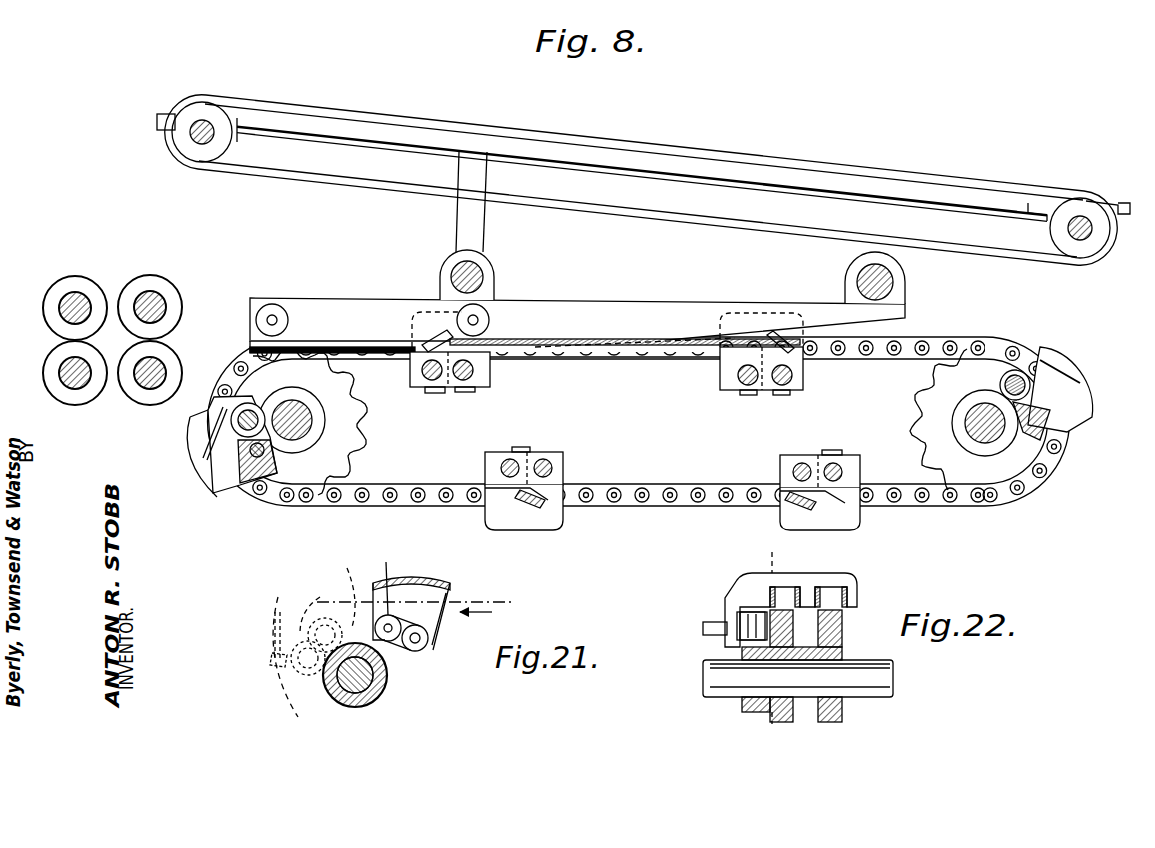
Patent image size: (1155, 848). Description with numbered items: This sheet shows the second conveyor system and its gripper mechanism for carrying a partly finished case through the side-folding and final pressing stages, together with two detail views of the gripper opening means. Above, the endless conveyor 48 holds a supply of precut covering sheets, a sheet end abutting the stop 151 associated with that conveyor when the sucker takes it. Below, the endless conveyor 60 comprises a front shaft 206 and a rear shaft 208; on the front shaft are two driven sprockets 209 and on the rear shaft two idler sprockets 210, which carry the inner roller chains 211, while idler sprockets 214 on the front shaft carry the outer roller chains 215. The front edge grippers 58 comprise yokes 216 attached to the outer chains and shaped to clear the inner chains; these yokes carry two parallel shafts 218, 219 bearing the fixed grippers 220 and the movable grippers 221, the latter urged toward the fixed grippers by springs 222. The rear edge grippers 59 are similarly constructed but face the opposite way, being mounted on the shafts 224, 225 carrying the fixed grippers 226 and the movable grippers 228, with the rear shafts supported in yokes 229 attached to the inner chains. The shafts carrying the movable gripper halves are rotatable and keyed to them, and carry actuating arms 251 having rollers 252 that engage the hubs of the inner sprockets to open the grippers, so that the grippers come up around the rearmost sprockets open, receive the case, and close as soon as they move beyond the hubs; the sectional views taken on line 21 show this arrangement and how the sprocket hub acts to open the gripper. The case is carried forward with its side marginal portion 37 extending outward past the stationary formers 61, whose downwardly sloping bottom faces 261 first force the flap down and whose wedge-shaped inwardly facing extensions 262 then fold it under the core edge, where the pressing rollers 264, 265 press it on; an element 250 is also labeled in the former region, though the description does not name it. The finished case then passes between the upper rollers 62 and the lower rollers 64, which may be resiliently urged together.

In FIG. 8, the endless conveyor 48 is at (853, 182).
In FIG. 8, the stop 151 is at (1127, 202).
In FIG. 8, the front edge grippers 58 is at (437, 343).
In FIG. 8, the rear edge grippers 59 is at (758, 333).
In FIG. 8, the stationary formers 61 is at (586, 298).
In FIG. 8, the side marginal portion 37 is at (638, 360).
In FIG. 8, the endless conveyor 60 is at (666, 508).
In FIG. 8, the upper rollers 62 is at (142, 280).
In FIG. 8, the lower rollers 64 is at (140, 395).
In FIG. 8, the front shaft 206 is at (300, 432).
In FIG. 21, the front shaft 206 is at (363, 677).
In FIG. 22, the front shaft 206 is at (870, 679).
In FIG. 8, the rear shaft 208 is at (985, 432).
In FIG. 8, the driven sprockets 209 is at (368, 424).
In FIG. 21, the driven sprockets 209 is at (373, 697).
In FIG. 22, the driven sprockets 209 is at (745, 700).
In FIG. 8, the idler sprockets 210 is at (906, 428).
In FIG. 8, the inner roller chains 211 is at (661, 480).
In FIG. 22, the inner roller chains 211 is at (800, 588).
In FIG. 22, the idler sprockets 214 is at (843, 713).
In FIG. 22, the outer roller chains 215 is at (850, 603).
In FIG. 8, the yokes 216 is at (548, 527).
In FIG. 21, the yokes 216 is at (432, 576).
In FIG. 22, the yokes 216 is at (855, 577).
In FIG. 8, the shaft 218 is at (420, 375).
In FIG. 21, the shaft 218 is at (262, 693).
In FIG. 22, the shaft 218 is at (708, 633).
In FIG. 8, the shaft 219 is at (505, 462).
In FIG. 21, the shaft 219 is at (433, 630).
In FIG. 8, the fixed grippers 220 is at (485, 468).
In FIG. 21, the fixed grippers 220 is at (338, 622).
In FIG. 8, the movable grippers 221 is at (428, 344).
In FIG. 21, the movable grippers 221 is at (287, 640).
In FIG. 8, the springs 222 is at (458, 390).
In FIG. 8, the shaft 224 is at (252, 405).
In FIG. 8, the shaft 225 is at (722, 375).
In FIG. 8, the fixed grippers 226 is at (722, 388).
In FIG. 8, the movable grippers 228 is at (772, 340).
In FIG. 8, the yokes 229 is at (213, 487).
In FIG. 22, the yokes 229 is at (740, 584).
In FIG. 8, the blade 250 is at (640, 317).
In FIG. 21, the actuating arms 251 is at (410, 632).
In FIG. 22, the actuating arms 251 is at (740, 625).
In FIG. 8, the rollers 252 is at (313, 346).
In FIG. 21, the rollers 252 is at (446, 643).
In FIG. 22, the rollers 252 is at (745, 607).
In FIG. 8, the downwardly sloping bottom faces 261 is at (870, 325).
In FIG. 8, the wedge-shaped inwardly facing extensions 262 is at (540, 339).
In FIG. 8, the pressing roller 264 is at (503, 312).
In FIG. 8, the pressing roller 265 is at (285, 306).
In FIG. 22, the section line 21 is at (770, 553).